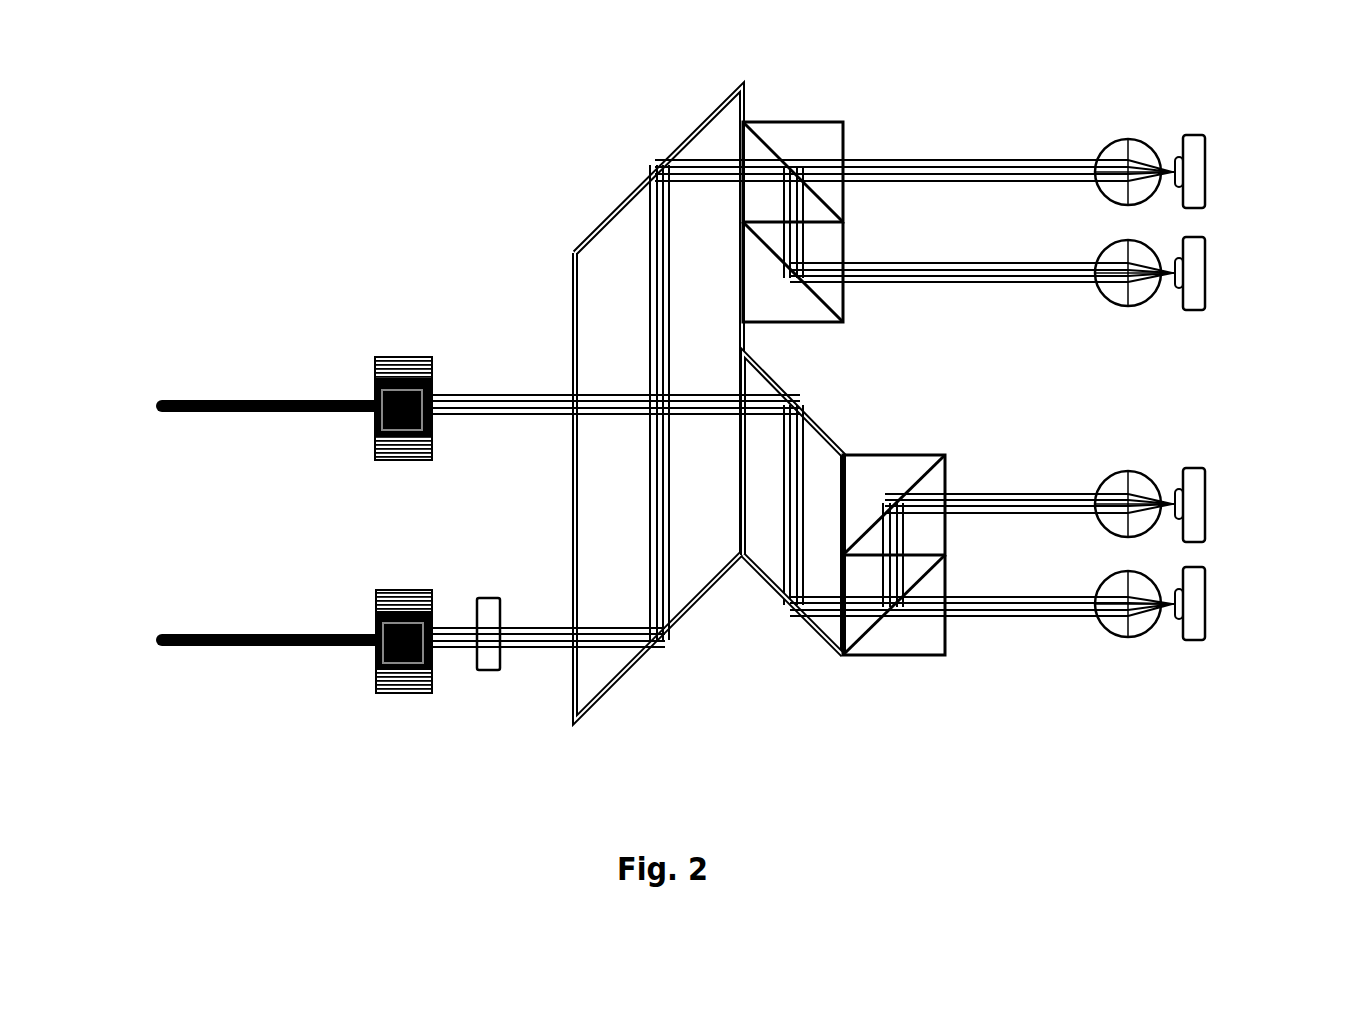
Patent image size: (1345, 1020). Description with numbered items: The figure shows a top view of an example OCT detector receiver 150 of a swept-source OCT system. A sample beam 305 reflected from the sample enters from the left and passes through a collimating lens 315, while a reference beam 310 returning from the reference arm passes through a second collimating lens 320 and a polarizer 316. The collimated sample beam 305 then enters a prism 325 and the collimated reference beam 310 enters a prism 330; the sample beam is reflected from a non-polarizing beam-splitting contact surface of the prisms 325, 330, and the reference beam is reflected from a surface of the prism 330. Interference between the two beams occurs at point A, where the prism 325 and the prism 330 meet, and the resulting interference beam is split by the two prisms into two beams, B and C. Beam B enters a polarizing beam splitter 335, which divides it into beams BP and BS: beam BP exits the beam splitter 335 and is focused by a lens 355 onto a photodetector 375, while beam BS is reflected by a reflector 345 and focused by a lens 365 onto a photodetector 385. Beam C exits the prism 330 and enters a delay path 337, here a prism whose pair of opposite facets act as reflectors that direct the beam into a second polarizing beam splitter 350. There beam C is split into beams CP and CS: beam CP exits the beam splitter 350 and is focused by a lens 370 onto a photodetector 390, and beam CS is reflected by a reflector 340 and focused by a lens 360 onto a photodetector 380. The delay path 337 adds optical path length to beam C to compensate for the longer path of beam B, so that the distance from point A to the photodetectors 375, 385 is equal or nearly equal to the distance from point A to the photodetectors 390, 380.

The detector receiver 150 is at (210, 116).
The sample beam 305 is at (280, 393).
The reference beam 310 is at (270, 625).
The collimating lens 315 is at (400, 355).
The polarizer 316 is at (485, 675).
The collimating lens 320 is at (392, 585).
The prism 325 is at (590, 235).
The prism 330 is at (563, 678).
The polarizing beam splitter 335 is at (850, 120).
The delay path 337 is at (810, 633).
The reflector 340 is at (945, 458).
The reflector 345 is at (808, 322).
The polarizing beam splitter 350 is at (905, 660).
The lens 355 is at (1112, 136).
The lens 360 is at (1150, 475).
The lens 365 is at (1103, 300).
The lens 370 is at (1098, 632).
The photodetector 375 is at (1207, 148).
The photodetector 380 is at (1205, 497).
The photodetector 385 is at (1207, 282).
The photodetector 390 is at (1205, 645).
The interference point A is at (655, 392).
The interference beam B is at (730, 150).
The interference beam C is at (778, 520).
The beam BP is at (1000, 156).
The beam BS is at (1020, 258).
The beam CS is at (1067, 493).
The beam CP is at (1082, 592).